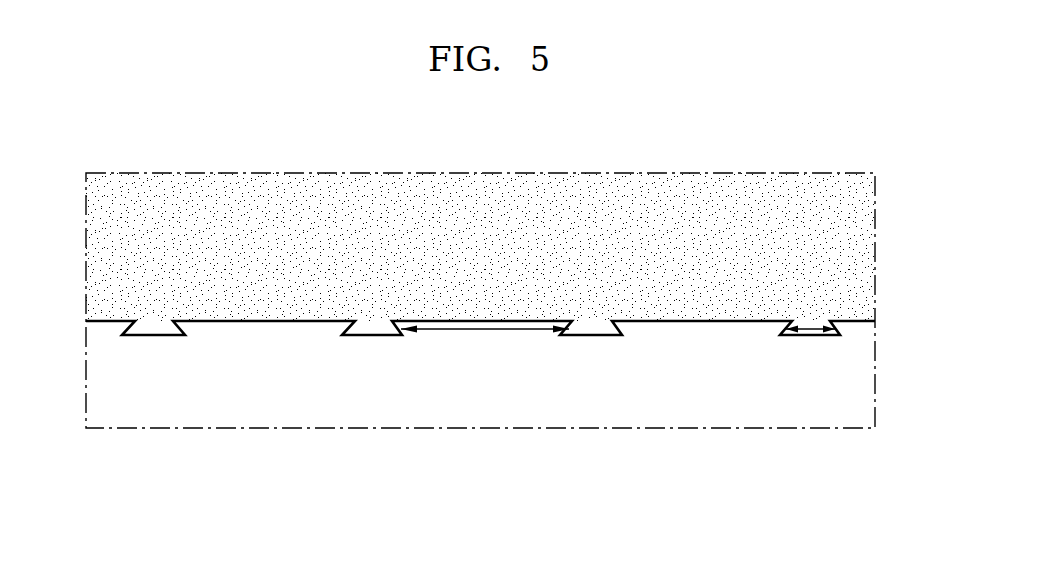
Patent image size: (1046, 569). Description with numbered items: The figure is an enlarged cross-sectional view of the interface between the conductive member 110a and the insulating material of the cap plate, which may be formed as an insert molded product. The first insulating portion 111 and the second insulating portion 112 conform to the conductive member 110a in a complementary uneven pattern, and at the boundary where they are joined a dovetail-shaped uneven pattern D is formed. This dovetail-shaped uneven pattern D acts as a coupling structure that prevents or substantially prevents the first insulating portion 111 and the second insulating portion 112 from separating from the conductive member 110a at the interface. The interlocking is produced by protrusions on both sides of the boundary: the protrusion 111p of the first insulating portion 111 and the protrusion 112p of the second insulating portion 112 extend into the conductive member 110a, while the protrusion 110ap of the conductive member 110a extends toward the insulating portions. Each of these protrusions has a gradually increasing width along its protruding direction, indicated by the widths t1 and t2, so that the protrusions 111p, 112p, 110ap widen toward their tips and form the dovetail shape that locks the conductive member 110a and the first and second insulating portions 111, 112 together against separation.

The first insulating portion 111 is at (480, 220).
The second insulating portion 112 is at (757, 197).
The protrusion of the first insulating portion 111p is at (480, 418).
The protrusion of the second insulating portion 112p is at (585, 327).
The conductive member 110a is at (708, 410).
The protrusion of the conductive member 110ap is at (480, 418).
The width t1 is at (810, 331).
The width t2 is at (482, 331).
The dovetail-shaped uneven pattern D is at (853, 320).